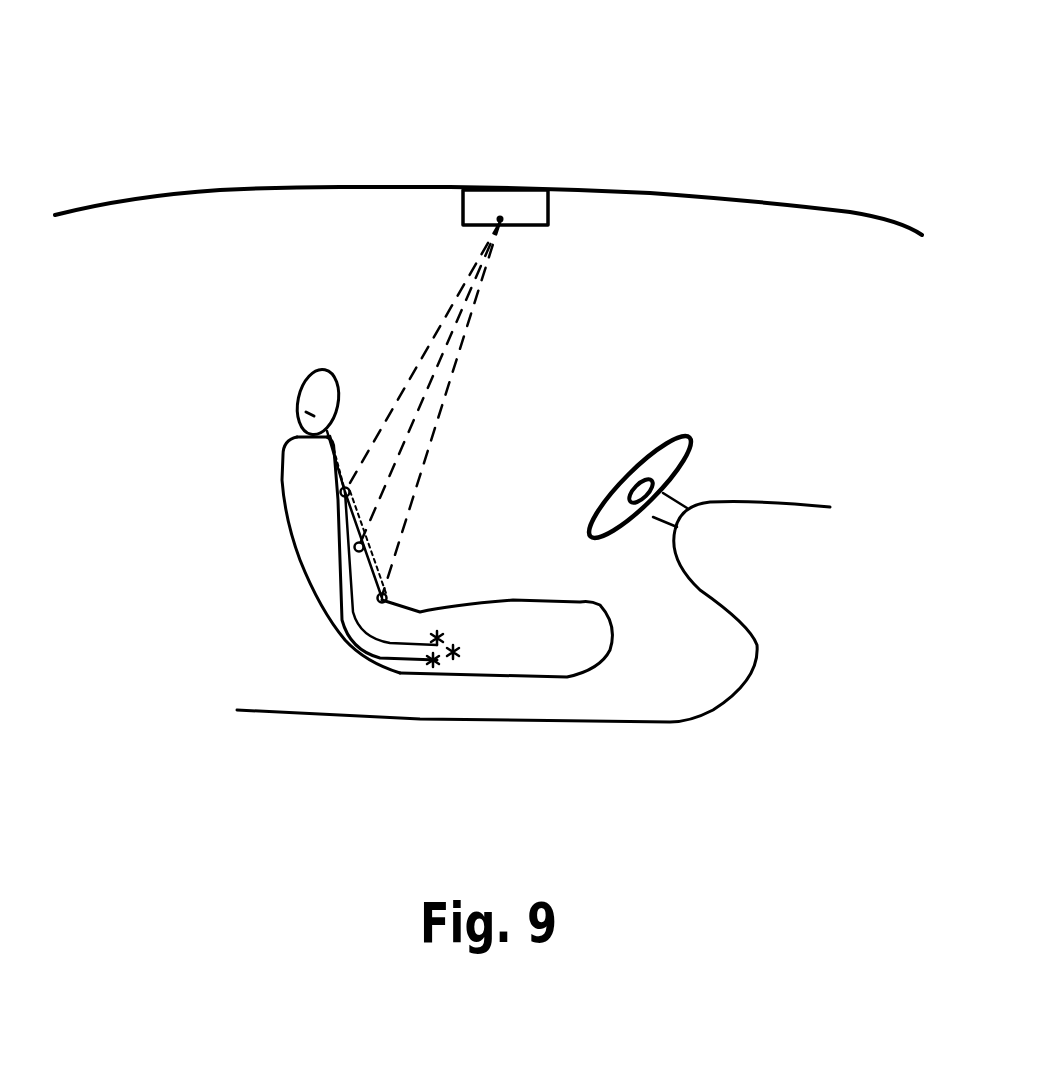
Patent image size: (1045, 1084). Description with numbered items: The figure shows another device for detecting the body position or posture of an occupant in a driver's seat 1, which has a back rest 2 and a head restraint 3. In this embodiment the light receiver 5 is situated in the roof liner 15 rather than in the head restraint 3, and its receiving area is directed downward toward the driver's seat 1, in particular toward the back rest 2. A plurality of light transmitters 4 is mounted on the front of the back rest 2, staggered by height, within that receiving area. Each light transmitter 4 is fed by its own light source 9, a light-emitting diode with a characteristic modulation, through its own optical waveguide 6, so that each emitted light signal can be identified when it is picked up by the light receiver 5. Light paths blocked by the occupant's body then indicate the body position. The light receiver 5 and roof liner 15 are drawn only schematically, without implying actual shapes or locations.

The driver's seat 1 is at (560, 650).
The back rest 2 is at (308, 508).
The head restraint 3 is at (295, 410).
The light transmitters 4 is at (350, 491).
The light receiver 5 is at (508, 200).
The optical waveguide 6 is at (337, 580).
The light source 9 is at (447, 657).
The roof liner 15 is at (683, 192).